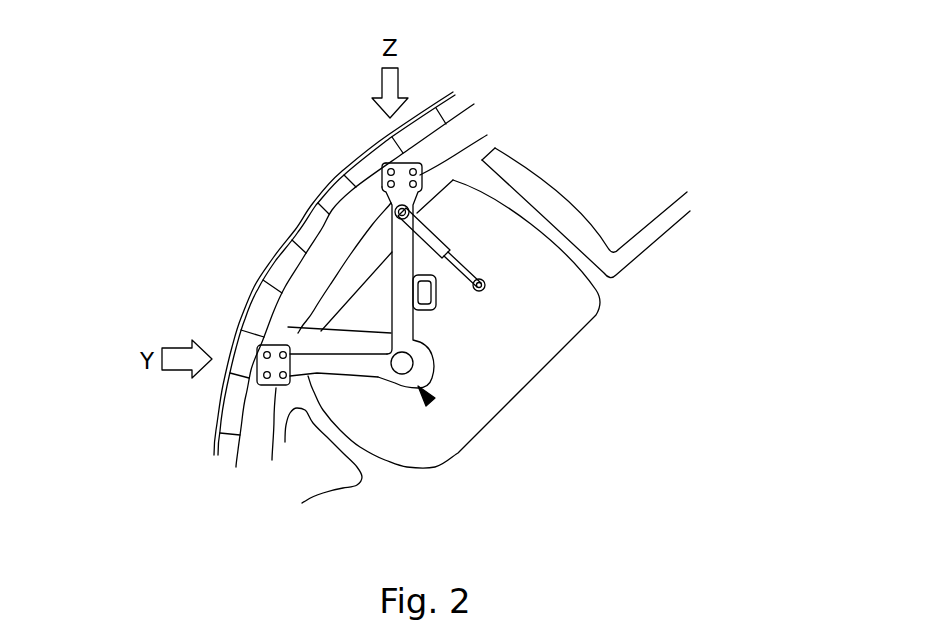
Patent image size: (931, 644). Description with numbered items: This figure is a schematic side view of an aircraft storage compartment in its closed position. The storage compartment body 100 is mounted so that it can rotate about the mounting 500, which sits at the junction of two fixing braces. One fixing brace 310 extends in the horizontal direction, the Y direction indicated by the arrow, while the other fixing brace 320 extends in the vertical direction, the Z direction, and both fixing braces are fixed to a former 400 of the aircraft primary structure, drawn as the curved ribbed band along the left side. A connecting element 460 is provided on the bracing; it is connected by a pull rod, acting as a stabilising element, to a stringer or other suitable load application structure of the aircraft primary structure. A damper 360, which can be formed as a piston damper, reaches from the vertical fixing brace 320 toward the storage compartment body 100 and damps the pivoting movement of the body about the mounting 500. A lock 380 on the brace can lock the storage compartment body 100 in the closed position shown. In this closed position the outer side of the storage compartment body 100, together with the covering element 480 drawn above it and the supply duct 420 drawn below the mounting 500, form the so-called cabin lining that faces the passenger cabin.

The storage compartment body 100 is at (540, 338).
The fixing brace 310 is at (302, 366).
The fixing brace 320 is at (400, 242).
The damper 360 is at (440, 252).
The lock 380 is at (433, 303).
The former 400 is at (463, 128).
The supply duct 420 is at (295, 480).
The connecting element 460 is at (318, 345).
The covering element 480 is at (695, 197).
The mounting 500 is at (423, 397).